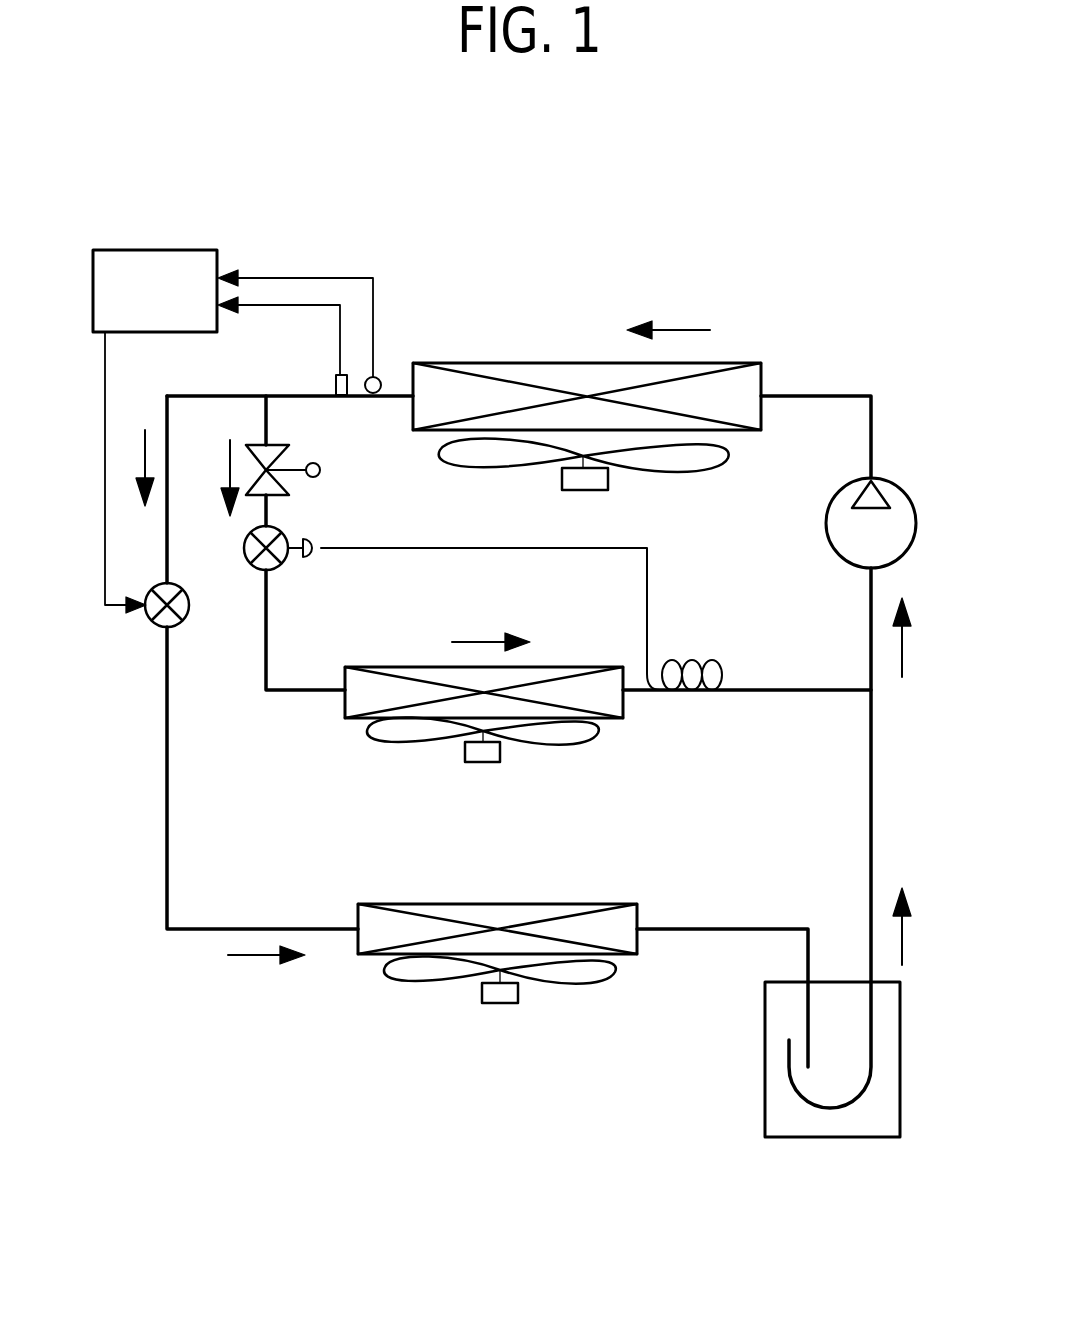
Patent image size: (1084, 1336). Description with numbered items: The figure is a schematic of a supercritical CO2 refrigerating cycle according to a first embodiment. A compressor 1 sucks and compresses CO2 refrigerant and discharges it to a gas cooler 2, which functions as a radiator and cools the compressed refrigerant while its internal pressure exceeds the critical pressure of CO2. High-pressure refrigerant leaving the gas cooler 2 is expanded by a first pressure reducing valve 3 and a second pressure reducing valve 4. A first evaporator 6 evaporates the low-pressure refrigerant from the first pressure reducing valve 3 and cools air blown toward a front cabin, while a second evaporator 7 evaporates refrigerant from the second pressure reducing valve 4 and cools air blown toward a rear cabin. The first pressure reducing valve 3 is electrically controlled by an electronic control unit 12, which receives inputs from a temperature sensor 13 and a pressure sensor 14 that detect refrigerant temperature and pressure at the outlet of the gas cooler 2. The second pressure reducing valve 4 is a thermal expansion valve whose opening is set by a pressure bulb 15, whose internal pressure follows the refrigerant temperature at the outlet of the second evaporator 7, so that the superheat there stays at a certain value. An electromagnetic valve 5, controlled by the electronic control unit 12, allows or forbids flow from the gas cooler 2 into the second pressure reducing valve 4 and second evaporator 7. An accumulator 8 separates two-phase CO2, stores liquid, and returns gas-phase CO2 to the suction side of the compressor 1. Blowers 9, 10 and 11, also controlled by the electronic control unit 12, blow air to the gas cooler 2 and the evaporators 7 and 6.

The compressor 1 is at (908, 528).
The gas cooler 2 is at (548, 372).
The first pressure reducing valve 3 is at (180, 622).
The second pressure reducing valve 4 is at (280, 565).
The electromagnetic valve 5 is at (290, 492).
The first evaporator 6 is at (372, 942).
The second evaporator 7 is at (605, 705).
The accumulator 8 is at (848, 1115).
The blower 9 is at (608, 480).
The blower 10 is at (465, 760).
The blower 11 is at (515, 995).
The electronic control unit 12 is at (150, 250).
The temperature sensor 13 is at (380, 378).
The pressure sensor 14 is at (338, 378).
The pressure bulb 15 is at (703, 660).